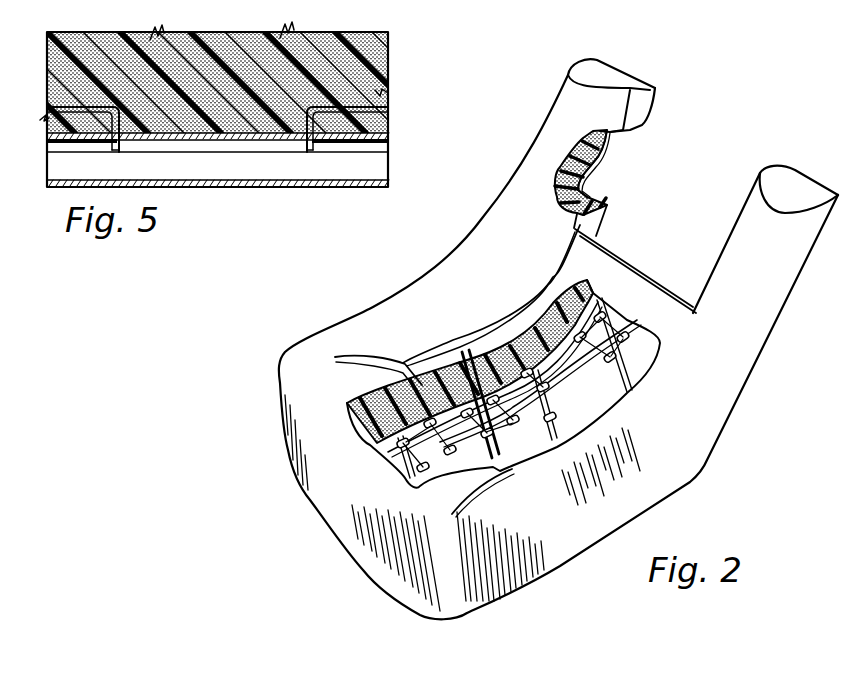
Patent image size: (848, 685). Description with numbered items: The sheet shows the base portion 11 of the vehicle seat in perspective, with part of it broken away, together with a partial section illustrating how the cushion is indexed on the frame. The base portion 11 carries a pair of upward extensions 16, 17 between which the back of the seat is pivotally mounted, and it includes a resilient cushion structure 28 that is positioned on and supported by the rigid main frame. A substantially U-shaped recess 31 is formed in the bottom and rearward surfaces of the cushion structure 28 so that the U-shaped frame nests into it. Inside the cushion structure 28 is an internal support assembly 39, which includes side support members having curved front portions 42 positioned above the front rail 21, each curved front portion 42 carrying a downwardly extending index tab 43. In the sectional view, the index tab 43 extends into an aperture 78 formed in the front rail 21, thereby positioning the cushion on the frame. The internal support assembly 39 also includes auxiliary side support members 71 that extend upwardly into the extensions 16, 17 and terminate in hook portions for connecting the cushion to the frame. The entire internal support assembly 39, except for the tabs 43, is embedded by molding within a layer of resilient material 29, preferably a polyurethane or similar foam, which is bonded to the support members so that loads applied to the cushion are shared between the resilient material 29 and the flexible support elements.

In FIG. 2, the base portion 11 is at (287, 357).
In FIG. 2, the upward extension 16 is at (563, 112).
In FIG. 2, the upward extension 17 is at (778, 275).
In FIG. 5, the front rail 21 is at (212, 170).
In FIG. 2, the cushion structure 28 is at (673, 446).
In FIG. 5, the layer of resilient material 29 is at (315, 40).
In FIG. 2, the layer of resilient material 29 is at (555, 183).
In FIG. 5, the U-shaped recess 31 is at (347, 140).
In FIG. 2, the internal support assembly 39 is at (401, 465).
In FIG. 5, the curved front portion 42 is at (377, 95).
In FIG. 5, the index tab 43 is at (113, 143).
In FIG. 2, the auxiliary side support member 71 is at (607, 152).
In FIG. 5, the aperture 78 is at (309, 143).